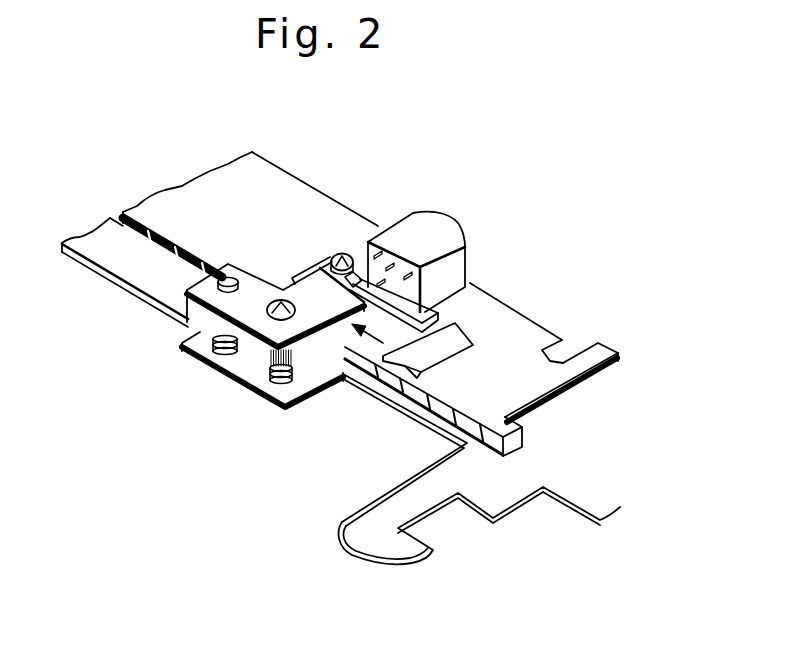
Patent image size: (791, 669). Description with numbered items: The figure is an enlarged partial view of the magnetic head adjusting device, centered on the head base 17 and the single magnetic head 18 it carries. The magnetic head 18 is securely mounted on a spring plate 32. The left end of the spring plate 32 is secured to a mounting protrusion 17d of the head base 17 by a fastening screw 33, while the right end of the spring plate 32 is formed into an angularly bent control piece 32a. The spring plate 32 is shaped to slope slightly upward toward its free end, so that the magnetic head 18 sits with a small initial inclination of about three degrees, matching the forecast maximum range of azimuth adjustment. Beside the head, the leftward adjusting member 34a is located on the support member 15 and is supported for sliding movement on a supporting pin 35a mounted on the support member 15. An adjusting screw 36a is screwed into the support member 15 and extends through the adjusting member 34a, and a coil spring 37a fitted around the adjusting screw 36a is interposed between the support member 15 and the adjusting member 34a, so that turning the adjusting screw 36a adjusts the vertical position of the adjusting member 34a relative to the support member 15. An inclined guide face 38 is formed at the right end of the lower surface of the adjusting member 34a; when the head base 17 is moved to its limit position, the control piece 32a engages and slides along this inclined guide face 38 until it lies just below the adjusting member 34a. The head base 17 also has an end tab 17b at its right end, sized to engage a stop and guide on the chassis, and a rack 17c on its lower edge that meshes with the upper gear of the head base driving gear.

The support member 15 is at (84, 258).
The head base 17 is at (281, 183).
The end tab 17b is at (602, 352).
The rack 17c is at (165, 244).
The mounting protrusion 17d is at (306, 274).
The magnetic head 18 is at (441, 236).
The spring plate 32 is at (440, 314).
The control piece 32a is at (428, 368).
The fastening screw 33 is at (348, 255).
The adjusting member 34a is at (231, 275).
The supporting pin 35a is at (188, 296).
The adjusting screw 36a is at (268, 312).
The coil spring 37a is at (283, 383).
The inclined guide face 38 is at (333, 350).